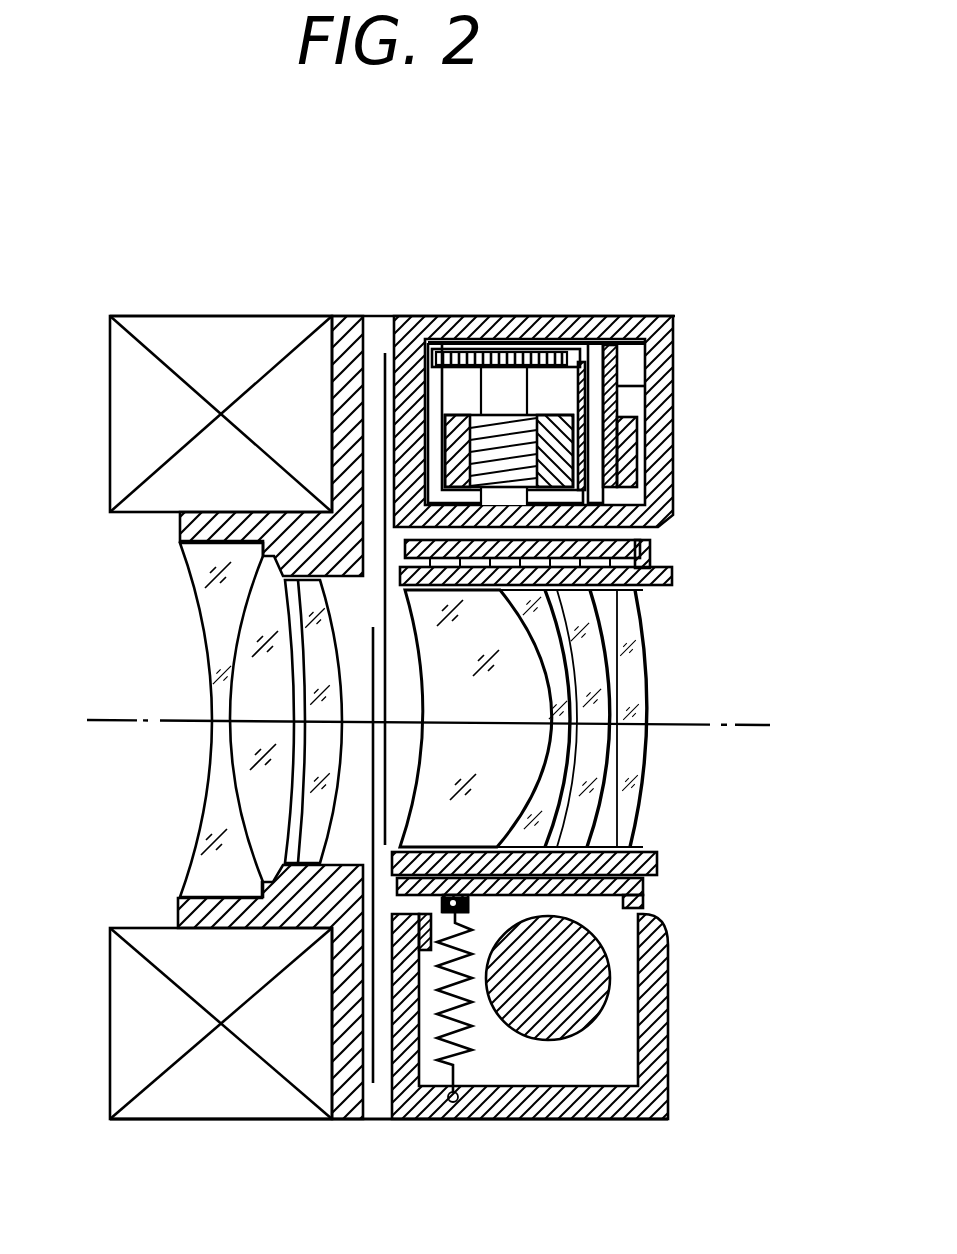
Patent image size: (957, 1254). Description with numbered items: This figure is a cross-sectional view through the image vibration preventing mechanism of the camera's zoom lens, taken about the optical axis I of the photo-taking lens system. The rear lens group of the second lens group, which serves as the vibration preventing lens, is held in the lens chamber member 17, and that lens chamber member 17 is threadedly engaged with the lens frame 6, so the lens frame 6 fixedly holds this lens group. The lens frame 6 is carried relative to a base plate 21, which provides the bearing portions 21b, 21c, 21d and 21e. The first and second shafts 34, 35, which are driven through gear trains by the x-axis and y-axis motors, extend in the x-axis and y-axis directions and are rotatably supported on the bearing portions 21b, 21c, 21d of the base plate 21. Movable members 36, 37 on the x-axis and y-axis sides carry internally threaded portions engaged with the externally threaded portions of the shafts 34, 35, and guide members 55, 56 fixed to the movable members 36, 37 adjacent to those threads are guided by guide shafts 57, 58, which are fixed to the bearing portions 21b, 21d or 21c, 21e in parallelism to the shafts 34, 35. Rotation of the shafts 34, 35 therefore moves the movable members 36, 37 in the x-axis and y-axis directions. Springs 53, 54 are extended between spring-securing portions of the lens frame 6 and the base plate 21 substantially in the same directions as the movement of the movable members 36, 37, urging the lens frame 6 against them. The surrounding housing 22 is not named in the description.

The lens frame 6 is at (593, 905).
The lens chamber member 17 is at (658, 588).
The base plate 21 is at (495, 392).
The bearing portion 21b is at (570, 327).
The bearing portion 21d is at (535, 322).
The bearing portion 21c is at (617, 551).
The bearing portion 21e is at (575, 535).
The fixed housing 22 is at (662, 430).
The first shaft 34 is at (494, 310).
The second shaft 35 is at (493, 393).
The movable member 36 is at (540, 357).
The movable member 37 is at (552, 415).
The spring 53 is at (506, 1055).
The spring 54 is at (458, 1062).
The guide member 55 is at (709, 407).
The guide member 56 is at (645, 384).
The guide shaft 57 is at (671, 373).
The guide shaft 58 is at (615, 320).
The optical axis I is at (110, 720).